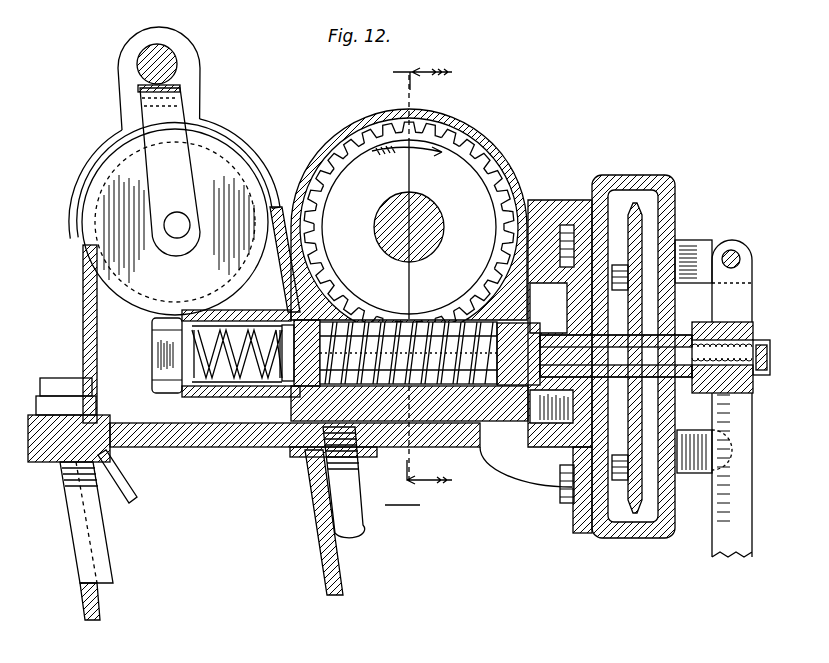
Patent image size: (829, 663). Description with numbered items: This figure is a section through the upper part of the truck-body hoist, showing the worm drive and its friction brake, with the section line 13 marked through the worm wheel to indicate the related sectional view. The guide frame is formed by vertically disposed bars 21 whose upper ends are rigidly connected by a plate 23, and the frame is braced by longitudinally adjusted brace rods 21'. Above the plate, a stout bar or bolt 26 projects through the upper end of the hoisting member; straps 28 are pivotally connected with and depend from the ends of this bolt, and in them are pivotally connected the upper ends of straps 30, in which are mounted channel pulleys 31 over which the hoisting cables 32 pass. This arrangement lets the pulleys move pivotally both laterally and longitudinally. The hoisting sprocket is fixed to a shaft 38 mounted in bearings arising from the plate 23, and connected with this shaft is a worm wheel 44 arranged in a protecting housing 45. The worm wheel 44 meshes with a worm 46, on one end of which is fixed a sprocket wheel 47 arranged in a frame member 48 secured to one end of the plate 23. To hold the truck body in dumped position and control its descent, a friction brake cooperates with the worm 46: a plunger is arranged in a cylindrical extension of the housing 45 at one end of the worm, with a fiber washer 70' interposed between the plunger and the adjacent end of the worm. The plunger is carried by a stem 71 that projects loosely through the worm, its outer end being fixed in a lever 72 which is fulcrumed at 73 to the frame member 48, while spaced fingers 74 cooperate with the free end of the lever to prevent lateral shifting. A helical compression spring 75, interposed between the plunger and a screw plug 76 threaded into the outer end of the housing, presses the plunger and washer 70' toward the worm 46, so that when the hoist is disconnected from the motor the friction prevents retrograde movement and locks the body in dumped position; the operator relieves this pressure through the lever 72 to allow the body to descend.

The section line 13- 13 is at (418, 279).
The vertically disposed bars 21 is at (216, 499).
The brace rods 21' is at (132, 479).
The plate 23 is at (524, 455).
The bar or bolt 26 is at (163, 60).
The straps 28 is at (185, 73).
The straps 30 is at (178, 183).
The channel pulleys 31 is at (127, 298).
The cables 32 is at (92, 295).
The shaft 38 is at (387, 210).
The worm wheel 44 is at (504, 165).
The protecting housing 45 is at (515, 190).
The worm 46 is at (475, 422).
The sprocket wheel 47 is at (643, 230).
The frame member 48 is at (621, 182).
The washer 70' is at (291, 370).
The stem 71 is at (540, 357).
The lever 72 is at (742, 510).
The fulcrum 73 is at (737, 253).
The spaced fingers 74 is at (706, 470).
The helical compression spring 75 is at (218, 386).
The screw plug 76 is at (166, 386).